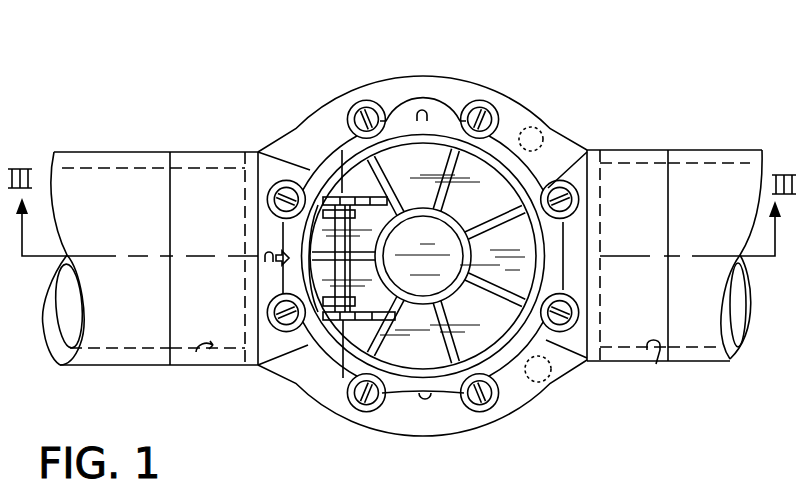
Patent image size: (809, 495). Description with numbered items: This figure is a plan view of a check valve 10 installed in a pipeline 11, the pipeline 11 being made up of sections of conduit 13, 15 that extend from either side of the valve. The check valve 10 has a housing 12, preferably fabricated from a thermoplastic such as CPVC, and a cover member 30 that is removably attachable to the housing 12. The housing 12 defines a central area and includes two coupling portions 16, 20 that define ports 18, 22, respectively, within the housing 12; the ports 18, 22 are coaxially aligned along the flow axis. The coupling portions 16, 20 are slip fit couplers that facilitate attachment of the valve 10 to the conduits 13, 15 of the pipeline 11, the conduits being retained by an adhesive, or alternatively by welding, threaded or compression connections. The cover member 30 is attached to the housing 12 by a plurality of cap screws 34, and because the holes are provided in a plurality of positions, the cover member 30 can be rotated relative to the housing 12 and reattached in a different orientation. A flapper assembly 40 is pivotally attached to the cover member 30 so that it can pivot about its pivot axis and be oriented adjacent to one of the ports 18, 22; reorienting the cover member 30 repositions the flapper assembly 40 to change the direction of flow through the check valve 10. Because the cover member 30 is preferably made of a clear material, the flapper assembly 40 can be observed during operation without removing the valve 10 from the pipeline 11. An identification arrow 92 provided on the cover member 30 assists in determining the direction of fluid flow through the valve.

The check valve 10 is at (566, 116).
The pipeline 11 is at (51, 130).
The housing 12 is at (523, 398).
The conduit 13 is at (683, 157).
The conduit 15 is at (118, 158).
The coupling portion 16 is at (627, 353).
The port 18 is at (655, 372).
The coupling portion 20 is at (193, 158).
The port 22 is at (213, 368).
The cover member 30 is at (373, 100).
The cap screws 34 is at (281, 196).
The flapper assembly 40 is at (341, 208).
The identification arrow 92 is at (282, 250).